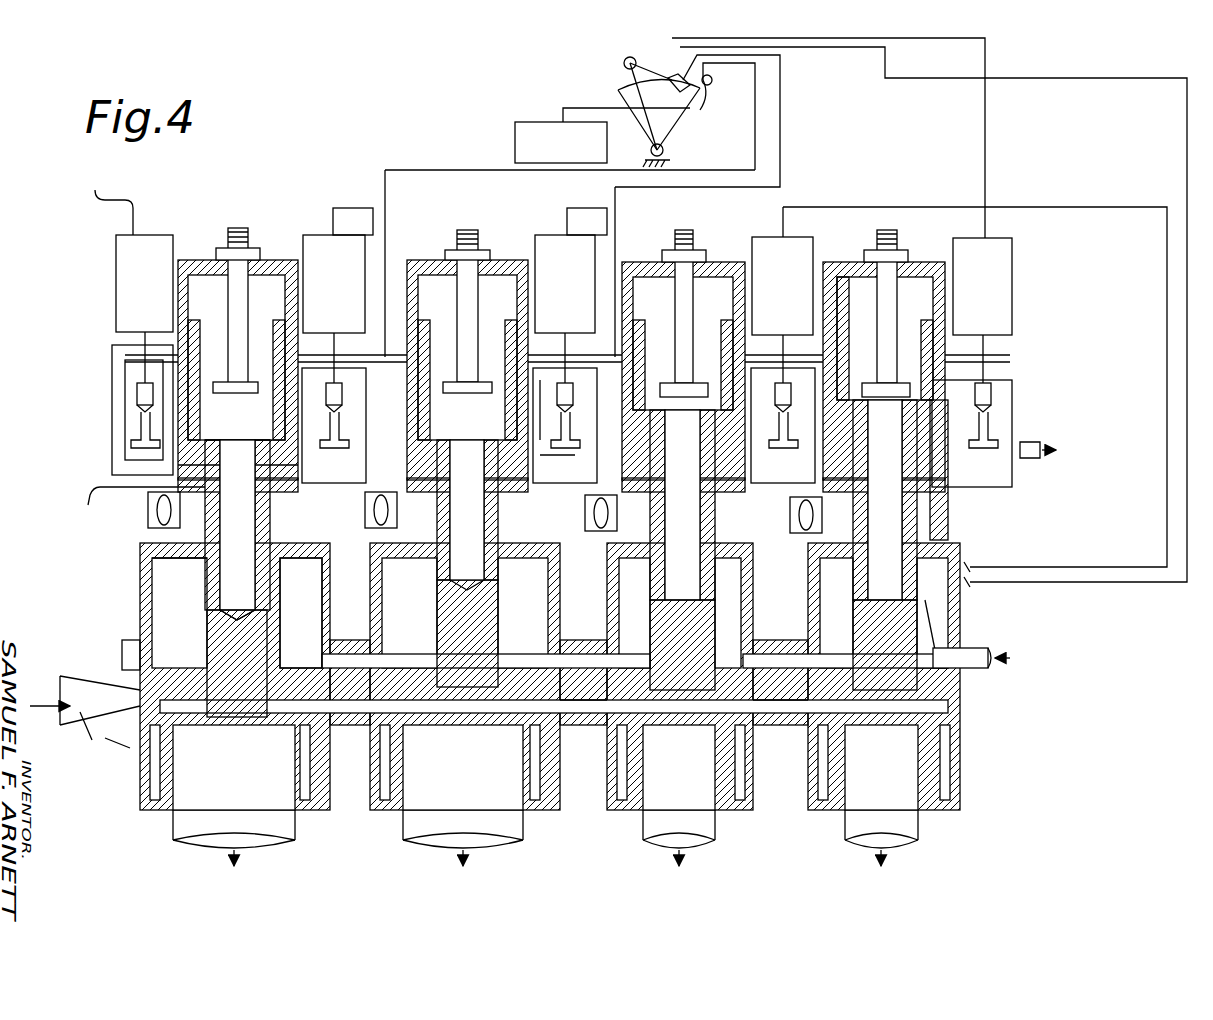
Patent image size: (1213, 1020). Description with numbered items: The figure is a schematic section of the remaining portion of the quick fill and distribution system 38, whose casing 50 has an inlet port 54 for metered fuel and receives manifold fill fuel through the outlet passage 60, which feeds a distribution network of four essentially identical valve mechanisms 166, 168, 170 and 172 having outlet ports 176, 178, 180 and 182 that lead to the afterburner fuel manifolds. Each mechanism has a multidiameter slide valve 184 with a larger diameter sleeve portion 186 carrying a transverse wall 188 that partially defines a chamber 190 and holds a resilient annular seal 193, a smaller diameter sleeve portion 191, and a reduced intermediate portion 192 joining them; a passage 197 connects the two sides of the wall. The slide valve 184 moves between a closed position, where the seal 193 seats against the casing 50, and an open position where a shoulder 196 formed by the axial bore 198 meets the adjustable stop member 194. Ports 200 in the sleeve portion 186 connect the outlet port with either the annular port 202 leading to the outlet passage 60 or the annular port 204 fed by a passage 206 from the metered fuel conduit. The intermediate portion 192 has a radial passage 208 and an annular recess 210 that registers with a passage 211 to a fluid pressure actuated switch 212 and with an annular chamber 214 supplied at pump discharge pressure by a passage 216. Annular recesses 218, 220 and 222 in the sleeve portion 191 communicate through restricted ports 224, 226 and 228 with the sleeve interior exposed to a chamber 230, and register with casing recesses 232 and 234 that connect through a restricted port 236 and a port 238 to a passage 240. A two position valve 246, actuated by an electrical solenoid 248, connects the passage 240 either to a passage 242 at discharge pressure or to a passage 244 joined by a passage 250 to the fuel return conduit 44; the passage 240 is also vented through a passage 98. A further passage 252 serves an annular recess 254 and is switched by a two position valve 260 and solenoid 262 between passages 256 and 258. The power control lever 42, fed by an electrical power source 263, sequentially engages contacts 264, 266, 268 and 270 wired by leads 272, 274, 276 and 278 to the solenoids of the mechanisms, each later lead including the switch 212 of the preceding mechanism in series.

The quick fill and distribution system 38 is at (365, 172).
The power control lever 42 is at (625, 68).
The fuel return conduit 44 is at (1090, 466).
The casing 50 is at (140, 565).
The inlet port 54 is at (965, 648).
The outlet passage 60 is at (110, 738).
The passage 98 is at (548, 415).
The first valve mechanism 166 is at (185, 444).
The second valve mechanism 168 is at (409, 438).
The third valve mechanism 170 is at (686, 232).
The fourth valve mechanism 172 is at (960, 460).
The outlet port 176 is at (173, 784).
The outlet port 178 is at (410, 784).
The outlet port 180 is at (643, 775).
The outlet port 182 is at (845, 755).
The multidiameter slide valve 184 is at (910, 515).
The larger diameter sleeve portion 186 is at (940, 695).
The transverse wall 188 is at (292, 655).
The chamber 190 is at (314, 596).
The smaller diameter sleeve portion 191 is at (855, 290).
The intermediate portion 192 is at (245, 639).
The annular seal 193 is at (635, 678).
The adjustable stop member 194 is at (248, 236).
The shoulder 196 is at (237, 525).
The passage 197 is at (940, 615).
The axial bore 198 is at (898, 449).
The ports 200 is at (540, 712).
The annular port 202 is at (140, 700).
The annular port 204 is at (122, 655).
The passage 206 is at (587, 645).
The radial passage 208 is at (210, 578).
The annular recess 210 is at (290, 520).
The passage 211 is at (255, 510).
The fluid pressure actuated switch 212 is at (148, 523).
The annular chamber 214 is at (290, 496).
The passage 216 is at (115, 488).
The annular recess 218 is at (238, 447).
The annular recess 220 is at (237, 426).
The annular recess 222 is at (215, 393).
The restricted port 224 is at (510, 440).
The restricted port 226 is at (508, 420).
The restricted port 228 is at (500, 345).
The chamber 230 is at (208, 275).
The annular recess 232 is at (410, 364).
The annular recess 234 is at (412, 400).
The restricted port 236 is at (318, 370).
The port 238 is at (505, 395).
The passage 240 is at (550, 370).
The passage 242 is at (588, 380).
The passage 244 is at (558, 466).
The two position valve 246 is at (995, 400).
The electrical solenoid 248 is at (1000, 238).
The passage 250 is at (972, 433).
The passage 252 is at (800, 340).
The annular recess 254 is at (195, 345).
The passage 256 is at (112, 348).
The passage 258 is at (135, 417).
The two position valve 260 is at (137, 395).
The electrical solenoid 262 is at (162, 296).
The electrical power source 263 is at (548, 122).
The electrical contact 264 is at (665, 78).
The electrical contact 266 is at (675, 80).
The electrical contact 268 is at (727, 88).
The electrical contact 270 is at (720, 102).
The lead 272 is at (985, 160).
The lead 274 is at (1187, 165).
The lead 276 is at (780, 152).
The lead 278 is at (490, 155).